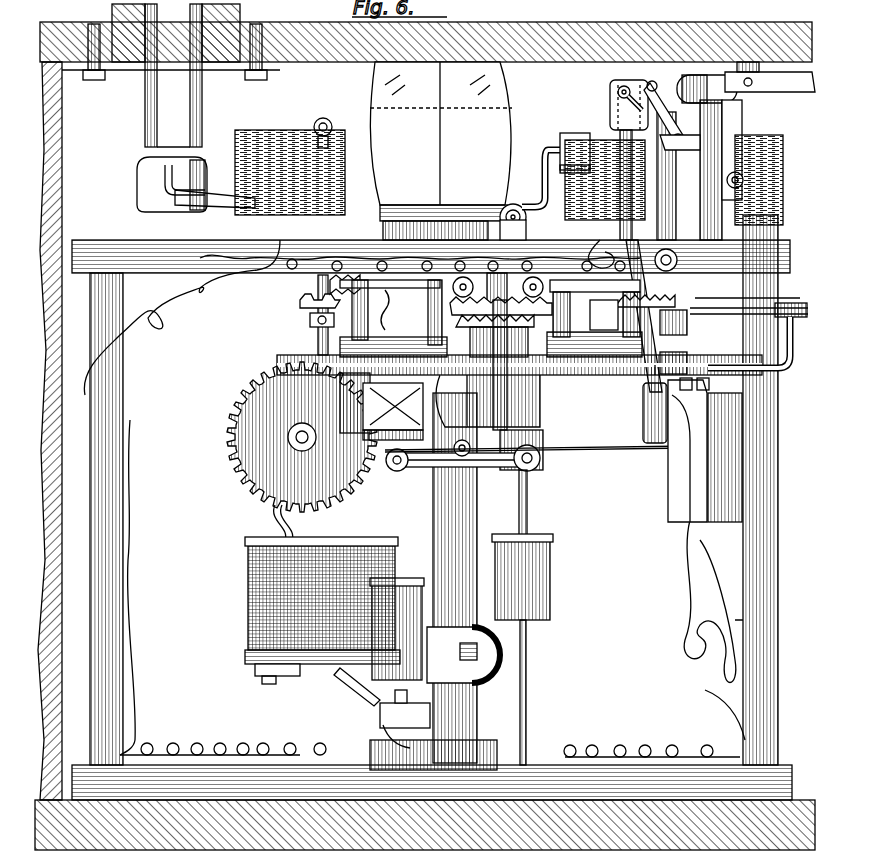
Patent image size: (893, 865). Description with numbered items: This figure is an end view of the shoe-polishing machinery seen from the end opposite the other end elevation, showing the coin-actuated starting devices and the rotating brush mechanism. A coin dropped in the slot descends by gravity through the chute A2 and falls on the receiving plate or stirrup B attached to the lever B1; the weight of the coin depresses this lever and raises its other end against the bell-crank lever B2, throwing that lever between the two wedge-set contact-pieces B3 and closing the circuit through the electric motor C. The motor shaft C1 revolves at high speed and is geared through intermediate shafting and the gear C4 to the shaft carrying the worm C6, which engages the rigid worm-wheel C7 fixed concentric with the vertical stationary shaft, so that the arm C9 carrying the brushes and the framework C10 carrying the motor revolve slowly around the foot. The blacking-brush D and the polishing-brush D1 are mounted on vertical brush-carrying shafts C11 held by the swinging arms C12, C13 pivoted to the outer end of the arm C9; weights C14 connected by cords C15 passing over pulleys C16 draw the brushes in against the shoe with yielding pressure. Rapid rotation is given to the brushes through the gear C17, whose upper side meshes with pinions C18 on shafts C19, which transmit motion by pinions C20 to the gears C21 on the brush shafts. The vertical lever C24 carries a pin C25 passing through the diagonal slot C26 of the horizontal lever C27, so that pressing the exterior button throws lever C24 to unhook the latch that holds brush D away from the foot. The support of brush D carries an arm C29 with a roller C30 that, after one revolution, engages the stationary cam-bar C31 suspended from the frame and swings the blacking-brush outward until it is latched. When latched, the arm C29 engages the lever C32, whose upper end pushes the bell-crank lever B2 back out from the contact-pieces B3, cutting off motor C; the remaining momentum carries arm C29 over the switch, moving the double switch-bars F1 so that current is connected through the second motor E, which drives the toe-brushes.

The chute A2 is at (176, 75).
The receiving plate or stirrup B is at (150, 175).
The lever B1 is at (240, 205).
The bell-crank lever B2 is at (668, 117).
The contact-pieces B3 is at (710, 157).
The electric motor C is at (315, 610).
The shaft C1 is at (262, 518).
The gear C4 is at (245, 478).
The worm C6 is at (358, 405).
The worm-wheel C7 is at (397, 406).
The arm C9 is at (530, 405).
The framework C10 is at (322, 680).
The brush-carrying shafts C11 is at (458, 282).
The swinging arm C12 is at (285, 360).
The swinging arm C13 is at (636, 395).
The weights C14 is at (548, 578).
The cords C15 is at (610, 450).
The pulleys C16 is at (540, 466).
The gear C17 is at (501, 351).
The pinions C18 is at (555, 252).
The shafts C19 is at (598, 297).
The pinions C20 is at (318, 315).
The gears C21 is at (330, 288).
The vertical lever C24 is at (578, 188).
The pin C25 is at (613, 105).
The diagonal slot C26 is at (628, 100).
The horizontal lever C27 is at (777, 82).
The arm C29 is at (790, 352).
The roller C30 is at (612, 318).
The cam-bar C31 is at (760, 297).
The lever C32 is at (678, 258).
The blacking-brush D is at (770, 147).
The polishing-brush D1 is at (290, 164).
The electric motor E is at (705, 451).
The double switch-bars F1 is at (705, 384).